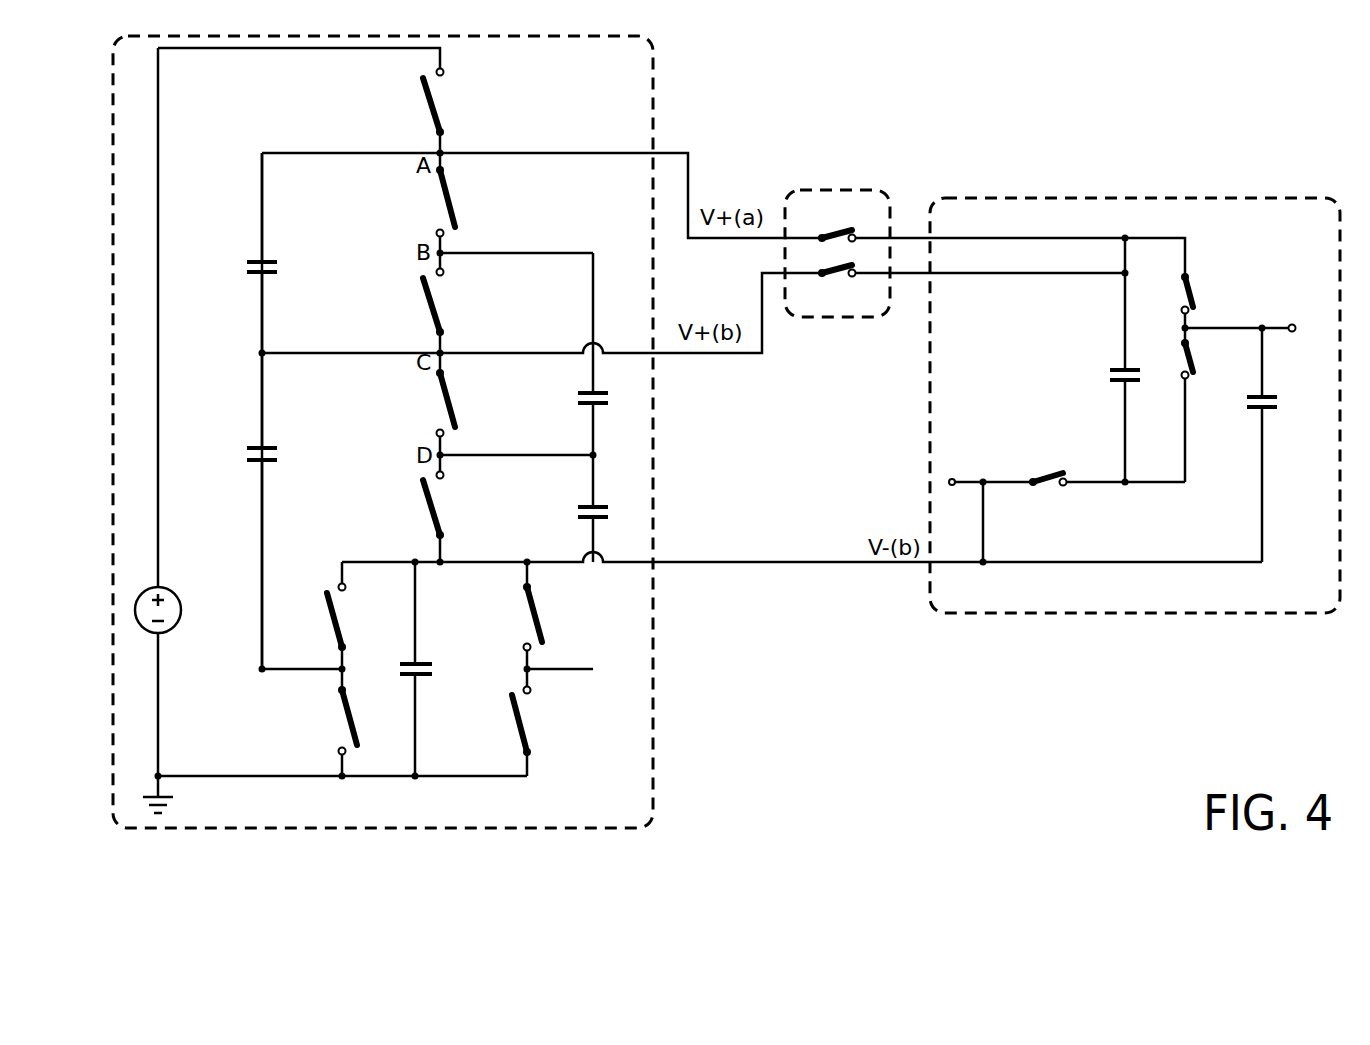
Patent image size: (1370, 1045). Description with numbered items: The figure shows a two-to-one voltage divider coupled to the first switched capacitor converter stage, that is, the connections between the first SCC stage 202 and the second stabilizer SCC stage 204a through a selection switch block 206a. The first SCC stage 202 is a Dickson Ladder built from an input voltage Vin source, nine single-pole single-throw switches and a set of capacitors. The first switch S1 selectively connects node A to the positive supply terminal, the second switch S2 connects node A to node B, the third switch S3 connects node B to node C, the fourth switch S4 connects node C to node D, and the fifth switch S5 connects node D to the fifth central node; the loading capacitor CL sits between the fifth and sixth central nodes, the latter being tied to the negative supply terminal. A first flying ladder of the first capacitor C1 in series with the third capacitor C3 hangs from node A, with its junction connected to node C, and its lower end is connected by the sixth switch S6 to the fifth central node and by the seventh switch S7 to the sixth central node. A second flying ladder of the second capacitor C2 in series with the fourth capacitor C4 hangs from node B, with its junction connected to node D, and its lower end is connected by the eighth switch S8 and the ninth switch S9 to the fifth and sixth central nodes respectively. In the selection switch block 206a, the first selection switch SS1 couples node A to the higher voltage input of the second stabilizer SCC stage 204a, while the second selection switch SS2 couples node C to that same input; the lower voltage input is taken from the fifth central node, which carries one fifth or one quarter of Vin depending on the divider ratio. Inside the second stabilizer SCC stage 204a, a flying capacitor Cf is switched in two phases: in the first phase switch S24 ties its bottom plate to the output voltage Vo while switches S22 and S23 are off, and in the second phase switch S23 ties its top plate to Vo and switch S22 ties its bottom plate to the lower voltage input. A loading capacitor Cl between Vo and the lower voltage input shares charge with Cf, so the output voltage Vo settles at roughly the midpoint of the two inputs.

The first SCC stage 202 is at (653, 684).
The second stabilizer SCC stage 204a is at (1014, 198).
The selection switch block 206a is at (836, 190).
The first switch S1 is at (438, 103).
The second switch S2 is at (443, 201).
The third switch S3 is at (438, 303).
The fourth switch S4 is at (443, 403).
The fifth switch S5 is at (438, 506).
The sixth switch S6 is at (335, 618).
The seventh switch S7 is at (533, 617).
The eighth switch S8 is at (527, 722).
The ninth switch S9 is at (340, 720).
The first capacitor C1 is at (279, 270).
The second capacitor C2 is at (577, 397).
The third capacitor C3 is at (279, 457).
The fourth capacitor C4 is at (577, 512).
The capacitor CL is at (432, 669).
The first selection switch SS1 is at (836, 222).
The second selection switch SS2 is at (836, 285).
The switch S22(b) S22 is at (1020, 494).
The switch S23 is at (1209, 293).
The switch S24 is at (1209, 359).
The flying capacitor Cf is at (1109, 377).
The loading capacitor Cl is at (1275, 405).
The input voltage Vin is at (176, 610).
The output voltage Vo is at (1291, 315).